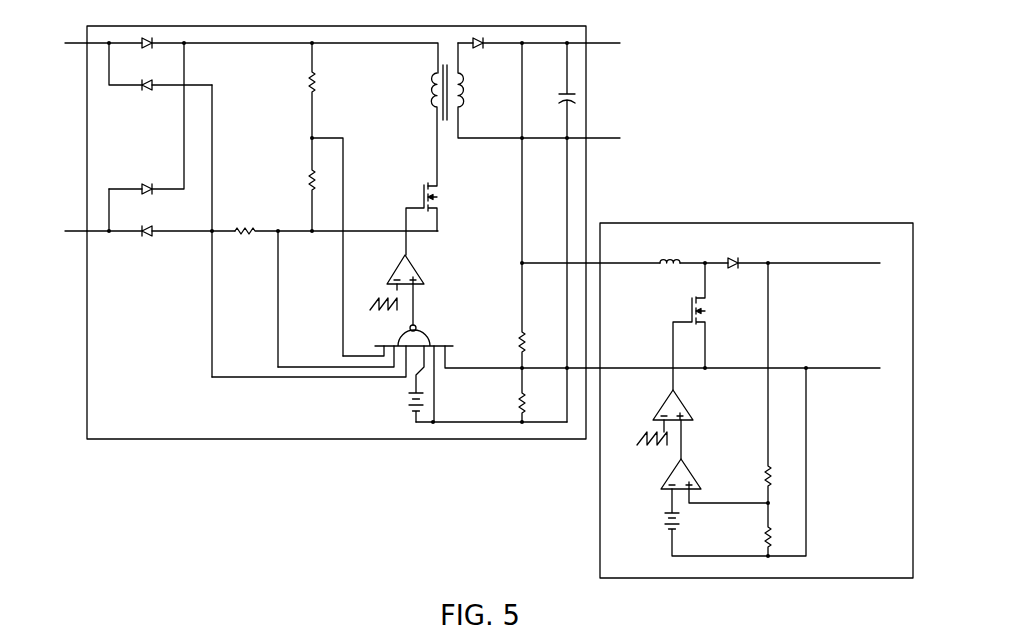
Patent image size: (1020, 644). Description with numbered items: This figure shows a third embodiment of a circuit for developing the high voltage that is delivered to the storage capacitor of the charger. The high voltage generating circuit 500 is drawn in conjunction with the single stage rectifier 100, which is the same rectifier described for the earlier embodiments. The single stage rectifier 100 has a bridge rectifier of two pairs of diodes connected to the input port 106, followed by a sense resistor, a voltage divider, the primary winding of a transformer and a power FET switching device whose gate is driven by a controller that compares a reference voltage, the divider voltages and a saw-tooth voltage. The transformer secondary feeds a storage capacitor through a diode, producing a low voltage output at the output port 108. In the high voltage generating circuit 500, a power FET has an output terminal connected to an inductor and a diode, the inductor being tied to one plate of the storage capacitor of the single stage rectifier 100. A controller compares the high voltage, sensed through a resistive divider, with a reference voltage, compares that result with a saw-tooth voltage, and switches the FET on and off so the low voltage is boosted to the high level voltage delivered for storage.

The single stage rectifier circuit 100 is at (262, 445).
The input port 106 is at (57, 160).
The output port 108 is at (647, 88).
The high voltage generating circuit 500 is at (587, 485).